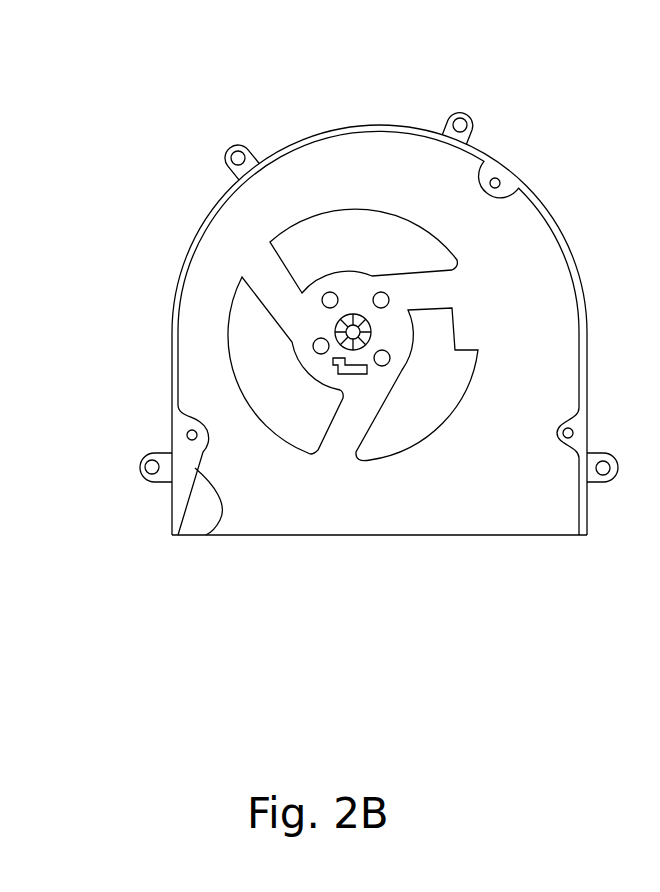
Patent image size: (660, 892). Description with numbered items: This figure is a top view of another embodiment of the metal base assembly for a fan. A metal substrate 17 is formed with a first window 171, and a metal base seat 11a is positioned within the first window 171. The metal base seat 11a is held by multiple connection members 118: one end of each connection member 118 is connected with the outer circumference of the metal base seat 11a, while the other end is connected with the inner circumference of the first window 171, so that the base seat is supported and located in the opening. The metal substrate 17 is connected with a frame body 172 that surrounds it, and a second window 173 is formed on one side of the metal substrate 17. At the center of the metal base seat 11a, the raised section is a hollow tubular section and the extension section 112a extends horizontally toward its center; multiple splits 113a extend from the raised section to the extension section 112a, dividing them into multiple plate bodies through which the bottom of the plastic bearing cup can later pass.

The metal base seat 11a is at (398, 332).
The metal substrate 17 is at (298, 500).
The first window 171 is at (253, 325).
The frame body 172 is at (204, 537).
The second window 173 is at (493, 535).
The connection members 118 is at (332, 447).
The extension section 112a is at (358, 316).
The splits 113a is at (337, 320).